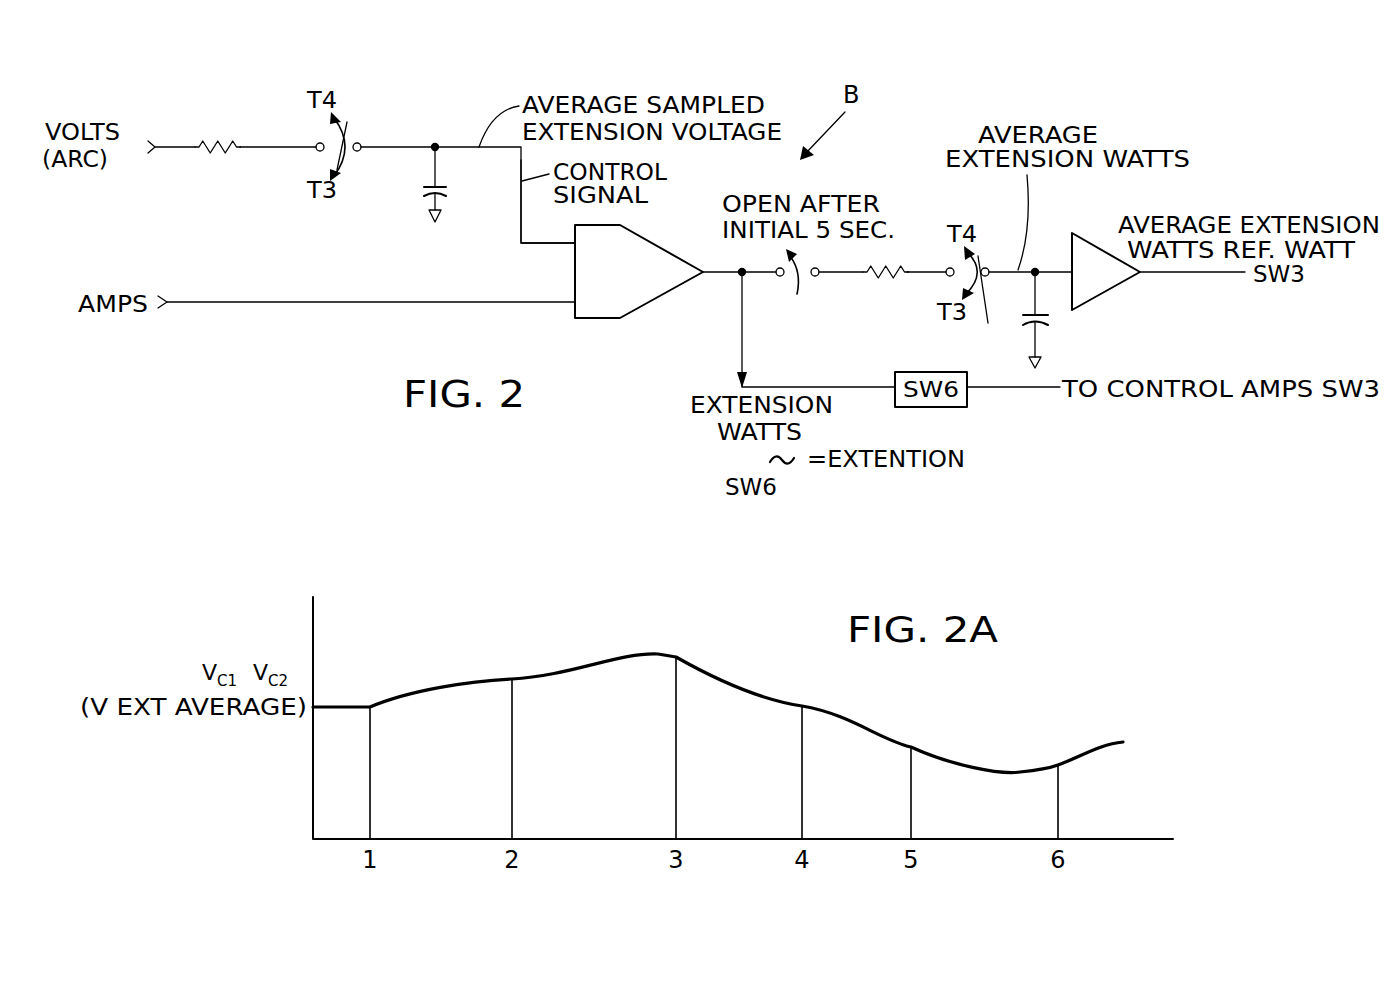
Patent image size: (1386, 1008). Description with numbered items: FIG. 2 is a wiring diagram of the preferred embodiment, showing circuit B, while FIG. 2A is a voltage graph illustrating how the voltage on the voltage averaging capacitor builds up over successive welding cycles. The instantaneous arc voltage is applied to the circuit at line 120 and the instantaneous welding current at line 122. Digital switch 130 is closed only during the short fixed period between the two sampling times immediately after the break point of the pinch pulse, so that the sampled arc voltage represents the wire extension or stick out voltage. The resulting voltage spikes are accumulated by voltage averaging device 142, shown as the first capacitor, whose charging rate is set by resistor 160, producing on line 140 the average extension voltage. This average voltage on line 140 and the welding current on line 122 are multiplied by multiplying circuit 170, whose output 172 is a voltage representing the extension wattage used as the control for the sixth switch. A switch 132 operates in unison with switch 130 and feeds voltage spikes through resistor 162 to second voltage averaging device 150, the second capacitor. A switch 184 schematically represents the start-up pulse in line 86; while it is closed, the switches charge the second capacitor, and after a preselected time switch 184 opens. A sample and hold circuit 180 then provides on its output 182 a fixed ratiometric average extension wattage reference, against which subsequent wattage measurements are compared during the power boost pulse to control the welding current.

The line 120 is at (179, 150).
The resistor 160 is at (214, 142).
The digital switch 130 is at (352, 143).
The voltage averaging device 142 is at (431, 192).
The line 122 is at (225, 299).
The line 140 is at (538, 246).
The multiplying circuit 170 is at (618, 311).
The output 172 is at (738, 345).
The switch 184 is at (813, 303).
The line 86 is at (803, 275).
The resistor 162 is at (893, 267).
The switch 132 is at (975, 299).
The second voltage averaging device 150 is at (1050, 318).
The sample and hold circuit 180 is at (1087, 250).
The output 182 is at (1177, 275).